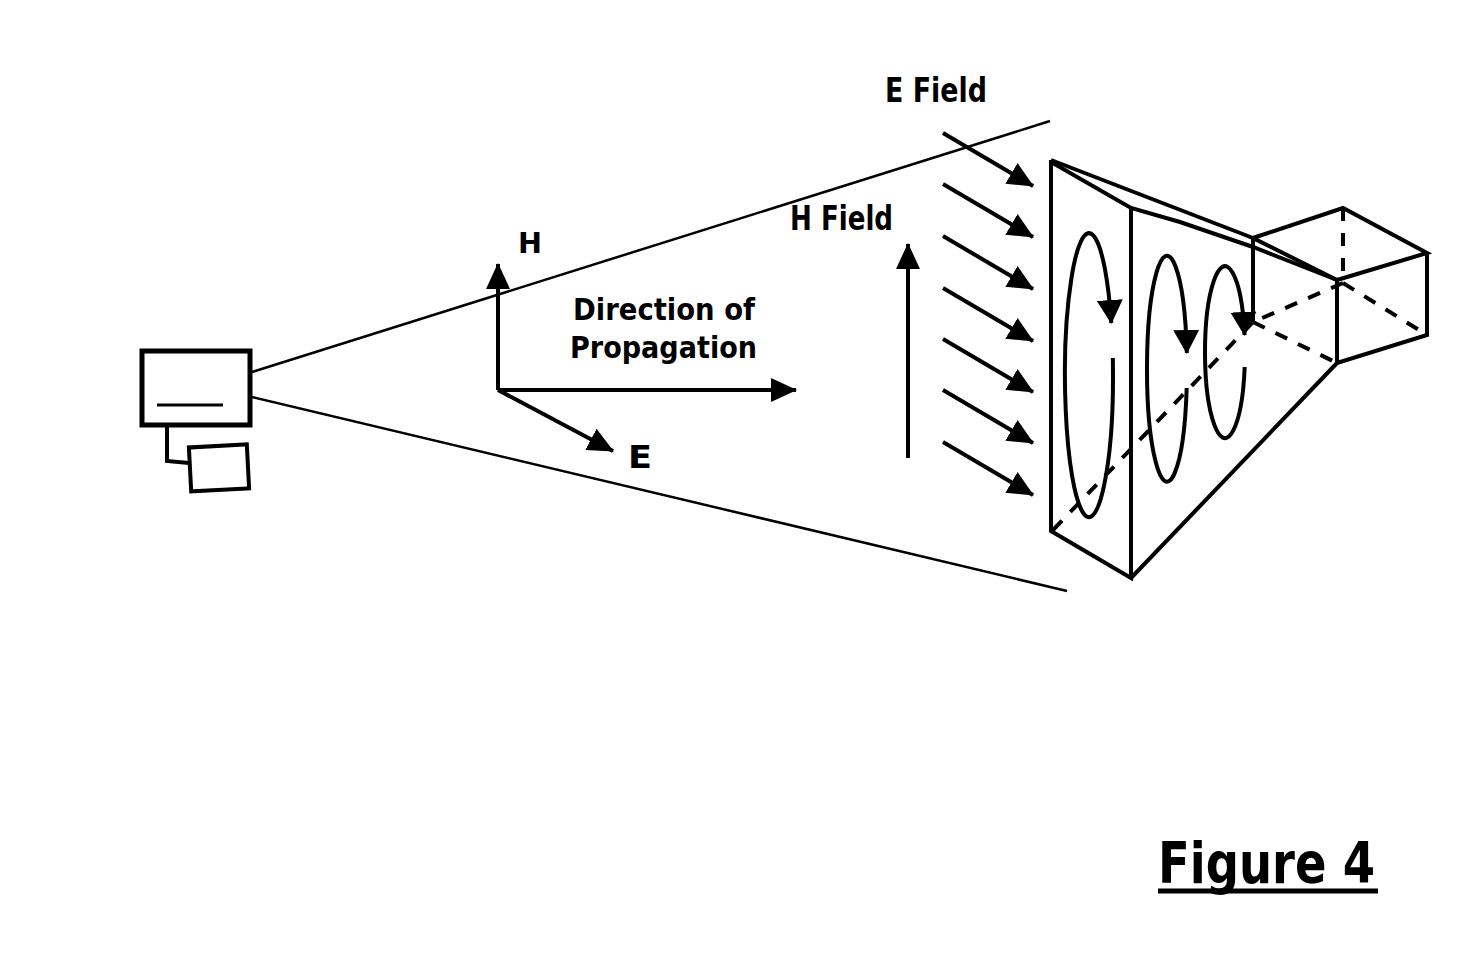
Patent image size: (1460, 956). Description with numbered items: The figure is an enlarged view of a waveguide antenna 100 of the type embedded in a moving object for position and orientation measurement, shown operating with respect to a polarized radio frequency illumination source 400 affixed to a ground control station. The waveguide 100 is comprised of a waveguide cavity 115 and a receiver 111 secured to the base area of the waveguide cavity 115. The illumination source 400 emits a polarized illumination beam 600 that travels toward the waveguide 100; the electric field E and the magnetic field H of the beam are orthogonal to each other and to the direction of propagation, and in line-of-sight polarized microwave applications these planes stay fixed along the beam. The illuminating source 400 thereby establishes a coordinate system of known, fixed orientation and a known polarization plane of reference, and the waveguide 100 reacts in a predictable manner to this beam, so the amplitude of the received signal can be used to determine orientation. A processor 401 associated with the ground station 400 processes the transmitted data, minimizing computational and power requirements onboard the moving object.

The waveguide antenna 100 is at (1239, 296).
The waveguide cavity 115 is at (1083, 173).
The receiver 111 is at (1363, 330).
The illumination beam 600 is at (712, 228).
The radio frequency illumination source 400 is at (225, 326).
The processor 401 is at (208, 458).